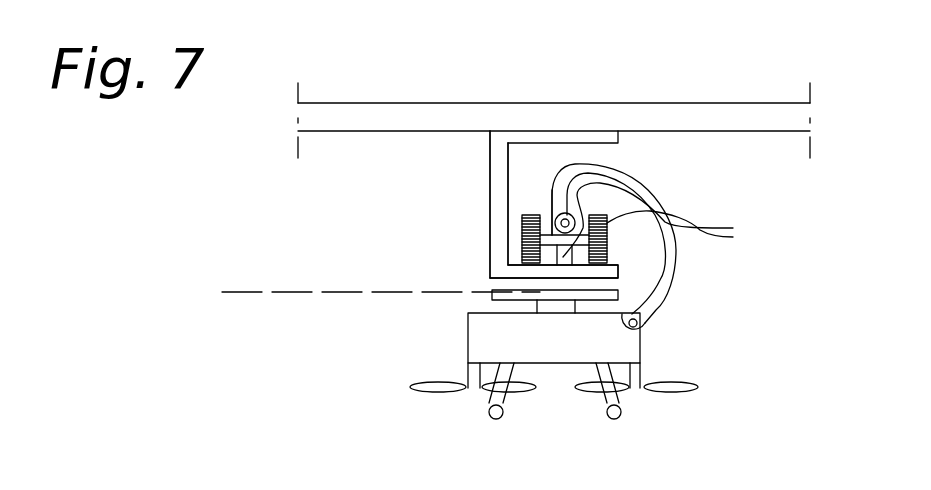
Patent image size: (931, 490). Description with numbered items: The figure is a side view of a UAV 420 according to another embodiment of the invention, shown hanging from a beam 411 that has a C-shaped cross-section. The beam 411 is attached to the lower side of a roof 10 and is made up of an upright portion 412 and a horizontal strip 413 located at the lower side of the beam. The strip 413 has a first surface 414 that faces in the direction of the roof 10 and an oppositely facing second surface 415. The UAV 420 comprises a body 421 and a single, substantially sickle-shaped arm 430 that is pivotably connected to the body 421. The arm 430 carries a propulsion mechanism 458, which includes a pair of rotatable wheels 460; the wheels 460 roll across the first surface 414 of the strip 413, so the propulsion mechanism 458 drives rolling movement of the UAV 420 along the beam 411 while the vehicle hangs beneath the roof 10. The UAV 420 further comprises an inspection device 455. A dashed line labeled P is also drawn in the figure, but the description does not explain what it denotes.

The roof 10 is at (688, 120).
The beam 411 is at (482, 210).
The upright portion 412 is at (498, 227).
The horizontal strip 413 is at (514, 277).
The first surface 414 is at (617, 262).
The second surface 415 is at (558, 279).
The UAV 420 is at (602, 366).
The body 421 is at (500, 345).
The arm 430 is at (650, 300).
The inspection device 455 is at (623, 172).
The propulsion mechanism 458 is at (549, 233).
The rotatable wheels 460 is at (673, 220).
The plane P is at (280, 292).